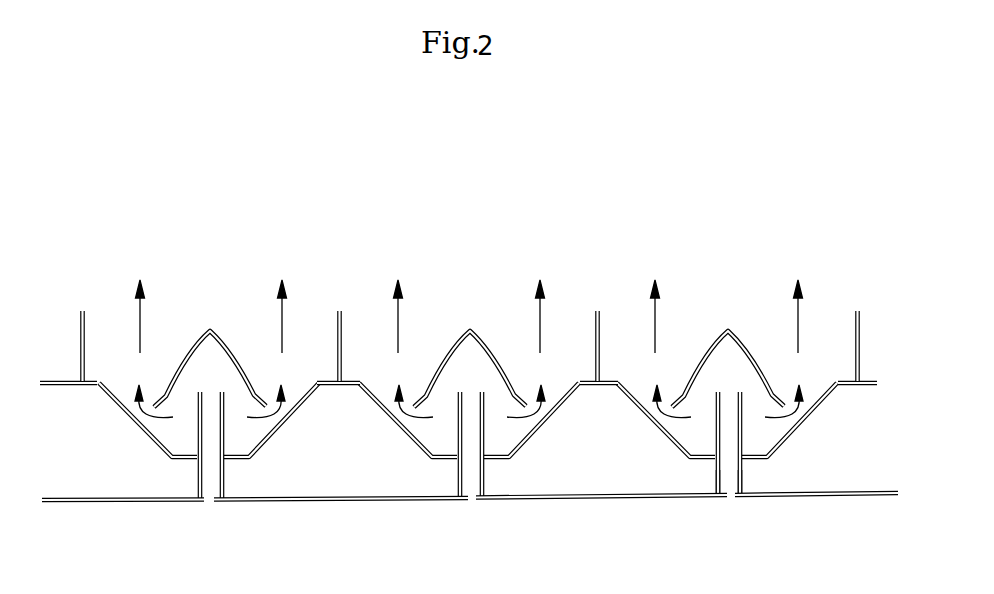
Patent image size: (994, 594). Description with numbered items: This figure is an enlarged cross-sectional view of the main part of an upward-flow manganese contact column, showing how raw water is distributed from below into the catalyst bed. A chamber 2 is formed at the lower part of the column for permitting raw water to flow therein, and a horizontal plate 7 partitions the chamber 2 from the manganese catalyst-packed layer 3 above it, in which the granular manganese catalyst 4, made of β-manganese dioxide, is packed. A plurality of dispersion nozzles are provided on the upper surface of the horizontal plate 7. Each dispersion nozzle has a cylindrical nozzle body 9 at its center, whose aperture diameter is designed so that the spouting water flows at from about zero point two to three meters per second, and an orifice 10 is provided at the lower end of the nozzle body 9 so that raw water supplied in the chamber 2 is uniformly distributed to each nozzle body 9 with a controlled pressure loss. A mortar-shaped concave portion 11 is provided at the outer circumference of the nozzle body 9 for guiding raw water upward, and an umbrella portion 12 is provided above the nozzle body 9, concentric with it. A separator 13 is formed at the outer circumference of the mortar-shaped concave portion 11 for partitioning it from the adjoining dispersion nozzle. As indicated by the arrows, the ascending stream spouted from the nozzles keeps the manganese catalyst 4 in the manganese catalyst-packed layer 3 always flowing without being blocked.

The chamber 2 is at (532, 553).
The manganese catalyst-packed layer 3 is at (585, 231).
The granular manganese catalyst 4 is at (829, 262).
The horizontal plate 7 is at (608, 500).
The nozzle body 9 is at (744, 429).
The orifice 10 is at (728, 499).
The mortar-shaped concave portion 11 is at (813, 407).
The umbrella portion 12 is at (748, 357).
The separator 13 is at (860, 340).